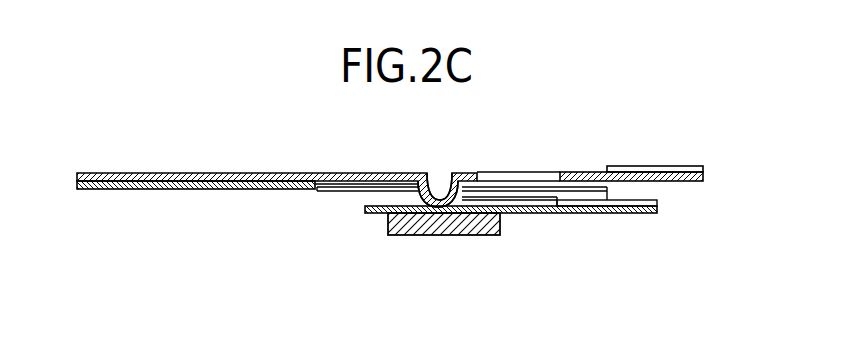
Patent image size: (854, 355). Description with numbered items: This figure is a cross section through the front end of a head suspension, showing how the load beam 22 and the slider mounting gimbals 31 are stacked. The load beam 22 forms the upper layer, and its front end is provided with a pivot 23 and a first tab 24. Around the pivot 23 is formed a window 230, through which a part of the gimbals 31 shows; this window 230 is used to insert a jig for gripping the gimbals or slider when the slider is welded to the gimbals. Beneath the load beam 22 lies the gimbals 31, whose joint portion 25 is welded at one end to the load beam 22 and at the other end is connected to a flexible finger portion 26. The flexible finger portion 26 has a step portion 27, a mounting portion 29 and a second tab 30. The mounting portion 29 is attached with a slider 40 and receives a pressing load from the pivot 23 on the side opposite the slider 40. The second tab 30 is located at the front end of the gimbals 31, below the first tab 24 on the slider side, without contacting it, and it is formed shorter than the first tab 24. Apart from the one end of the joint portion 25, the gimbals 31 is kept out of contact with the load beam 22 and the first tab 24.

The load beam 22 is at (166, 173).
The pivot 23 is at (430, 172).
The window 230 is at (512, 172).
The first tab 24 is at (658, 166).
The joint portion 25 is at (142, 190).
The flexible finger portion 26 is at (338, 191).
The step portion 27 is at (582, 205).
The mounting portion 29 is at (518, 215).
The second tab 30 is at (657, 203).
The slider mounting gimbals 31 is at (262, 200).
The slider 40 is at (445, 237).